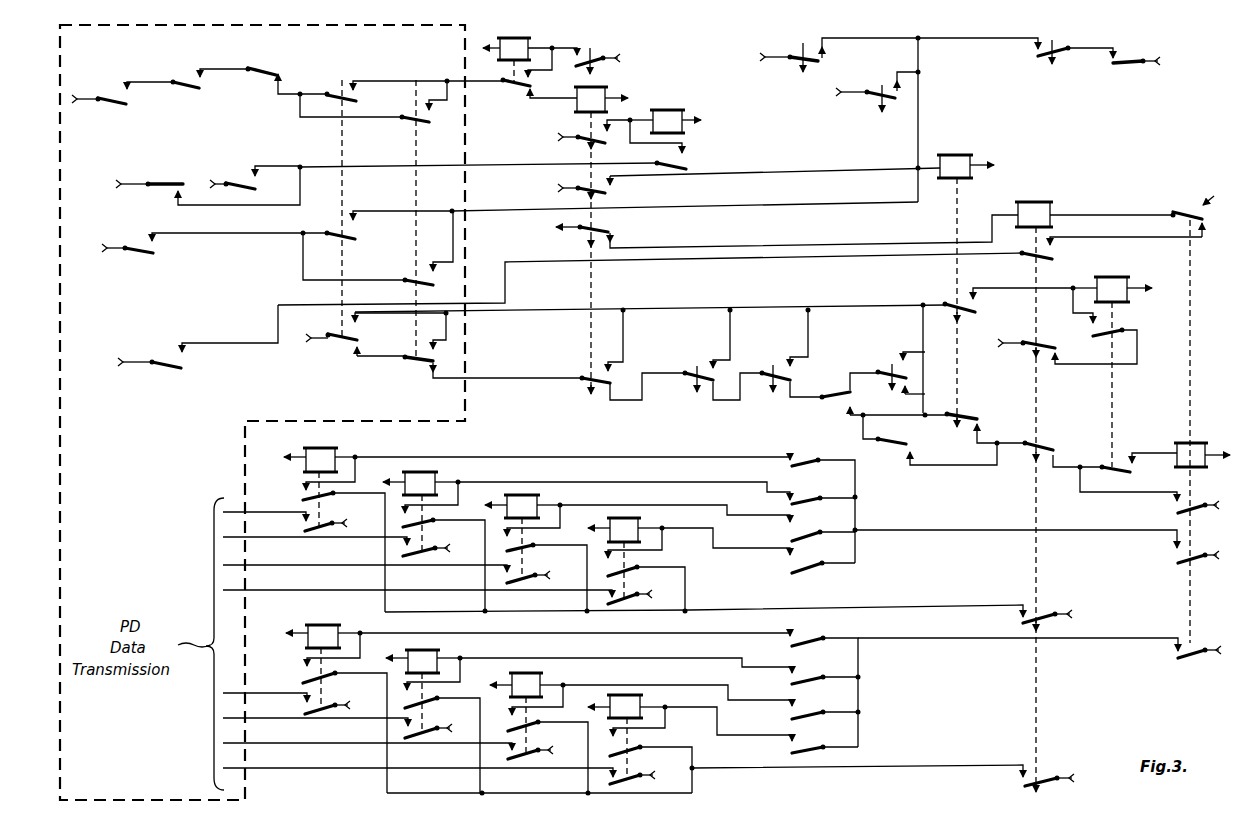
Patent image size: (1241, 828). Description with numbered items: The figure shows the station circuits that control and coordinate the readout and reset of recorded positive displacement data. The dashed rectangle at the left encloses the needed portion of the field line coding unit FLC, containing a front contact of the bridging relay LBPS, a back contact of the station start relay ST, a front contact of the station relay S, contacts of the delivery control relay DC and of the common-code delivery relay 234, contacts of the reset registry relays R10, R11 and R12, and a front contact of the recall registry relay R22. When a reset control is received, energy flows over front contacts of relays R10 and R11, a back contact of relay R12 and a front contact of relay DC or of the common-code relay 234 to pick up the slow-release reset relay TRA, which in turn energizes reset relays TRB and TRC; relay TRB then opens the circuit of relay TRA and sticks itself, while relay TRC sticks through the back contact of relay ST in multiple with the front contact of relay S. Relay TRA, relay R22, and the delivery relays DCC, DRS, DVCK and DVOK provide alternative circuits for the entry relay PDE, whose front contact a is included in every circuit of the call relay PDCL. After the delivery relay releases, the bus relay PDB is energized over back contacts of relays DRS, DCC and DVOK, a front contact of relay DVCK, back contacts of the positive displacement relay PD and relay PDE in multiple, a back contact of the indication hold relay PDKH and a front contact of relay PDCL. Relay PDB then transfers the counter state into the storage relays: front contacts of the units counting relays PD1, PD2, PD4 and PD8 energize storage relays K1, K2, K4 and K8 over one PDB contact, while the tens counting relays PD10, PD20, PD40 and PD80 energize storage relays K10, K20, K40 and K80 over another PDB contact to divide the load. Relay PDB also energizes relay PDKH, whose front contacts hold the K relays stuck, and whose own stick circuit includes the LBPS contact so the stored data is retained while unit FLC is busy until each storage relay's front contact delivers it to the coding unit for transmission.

The registry relay R10 is at (116, 89).
The registry relay R11 is at (199, 77).
The registry relay R12 is at (283, 67).
The delivery control relay DC is at (438, 209).
The common delivery control relay 234 is at (381, 200).
The station start relay ST is at (203, 180).
The station relay S is at (249, 172).
The registry relay R22 is at (208, 234).
The bridging relay LBPS is at (192, 338).
The field line coding unit FLC is at (466, 405).
The reset relay TRB is at (512, 55).
The reset relay TRA is at (778, 203).
The reset relay TRC is at (672, 126).
The delivery command control relay DCC is at (888, 207).
The delivery reset relay DRS is at (789, 219).
The delivery valve indicating relay DVOK is at (989, 209).
The delivery valve indicating relay DVCK is at (985, 220).
The entry relay PDE is at (995, 286).
The indication hold relay PDKH is at (946, 484).
The bus relay PDB is at (1047, 417).
The call relay PDCL is at (1119, 362).
The positive displacement relay PD is at (930, 440).
The counting relay PD1 is at (606, 496).
The counting relay PD2 is at (657, 492).
The counting relay PD4 is at (708, 525).
The counting relay PD8 is at (759, 555).
The counting relay PD10 is at (610, 680).
The counting relay PD20 is at (665, 674).
The counting relay PD40 is at (717, 707).
The counting relay PD80 is at (768, 735).
The storage relay K1 is at (320, 518).
The storage relay K2 is at (427, 529).
The storage relay K4 is at (529, 537).
The storage relay K8 is at (629, 547).
The storage relay K10 is at (322, 697).
The storage relay K20 is at (424, 711).
The storage relay K40 is at (531, 713).
The storage relay K80 is at (632, 725).